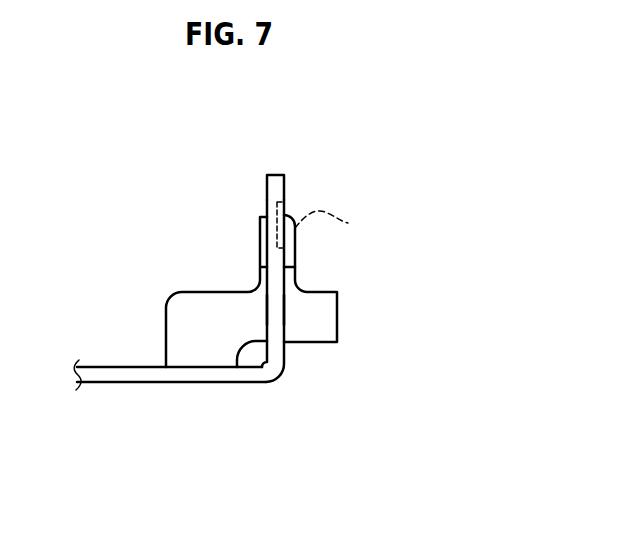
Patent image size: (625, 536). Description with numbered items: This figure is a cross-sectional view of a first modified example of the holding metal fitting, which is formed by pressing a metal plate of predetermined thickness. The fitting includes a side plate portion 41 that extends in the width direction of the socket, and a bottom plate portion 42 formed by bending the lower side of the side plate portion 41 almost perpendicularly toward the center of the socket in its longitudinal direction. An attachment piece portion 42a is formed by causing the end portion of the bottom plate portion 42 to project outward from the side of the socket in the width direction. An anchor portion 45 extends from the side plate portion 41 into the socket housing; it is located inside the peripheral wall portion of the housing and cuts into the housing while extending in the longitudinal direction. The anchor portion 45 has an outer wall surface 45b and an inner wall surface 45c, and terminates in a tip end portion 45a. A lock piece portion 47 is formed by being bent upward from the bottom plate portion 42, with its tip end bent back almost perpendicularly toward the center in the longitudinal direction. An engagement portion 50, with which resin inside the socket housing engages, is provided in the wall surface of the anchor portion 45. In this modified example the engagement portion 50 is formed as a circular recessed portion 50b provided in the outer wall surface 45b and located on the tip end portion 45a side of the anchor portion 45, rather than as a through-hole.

The side plate portion 41 is at (177, 385).
The bottom plate portion 42 is at (193, 290).
The attachment piece portion 42a is at (327, 313).
The anchor portion 45 is at (287, 330).
The tip end portion of anchor portion 45a is at (273, 182).
The outer wall surface of anchor portion 45b is at (284, 308).
The inner wall surface of anchor portion 45c is at (284, 309).
The lock piece portion 47 is at (294, 255).
The engagement portion 50 is at (285, 203).
The recessed portion 50b is at (344, 220).